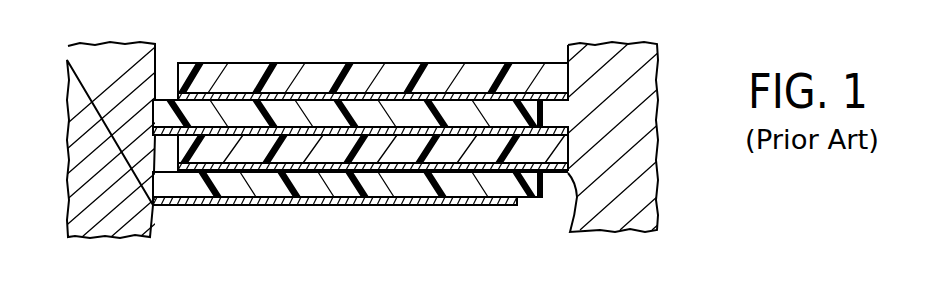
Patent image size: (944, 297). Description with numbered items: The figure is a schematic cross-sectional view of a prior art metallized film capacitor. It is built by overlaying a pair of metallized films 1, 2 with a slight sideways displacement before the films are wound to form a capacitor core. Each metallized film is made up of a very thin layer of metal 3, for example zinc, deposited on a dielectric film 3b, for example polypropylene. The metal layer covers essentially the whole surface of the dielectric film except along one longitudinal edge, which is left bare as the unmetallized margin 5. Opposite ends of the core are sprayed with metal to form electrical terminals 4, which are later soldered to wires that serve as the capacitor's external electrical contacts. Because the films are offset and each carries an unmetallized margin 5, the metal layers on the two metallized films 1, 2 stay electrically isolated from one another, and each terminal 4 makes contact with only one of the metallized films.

The metallized film 1 is at (404, 152).
The metallized film 2 is at (227, 192).
The layer of metal 3 is at (475, 137).
The dielectric film 3b is at (527, 150).
The electrical terminal 4 is at (84, 133).
The unmetallized margin 5 is at (166, 166).